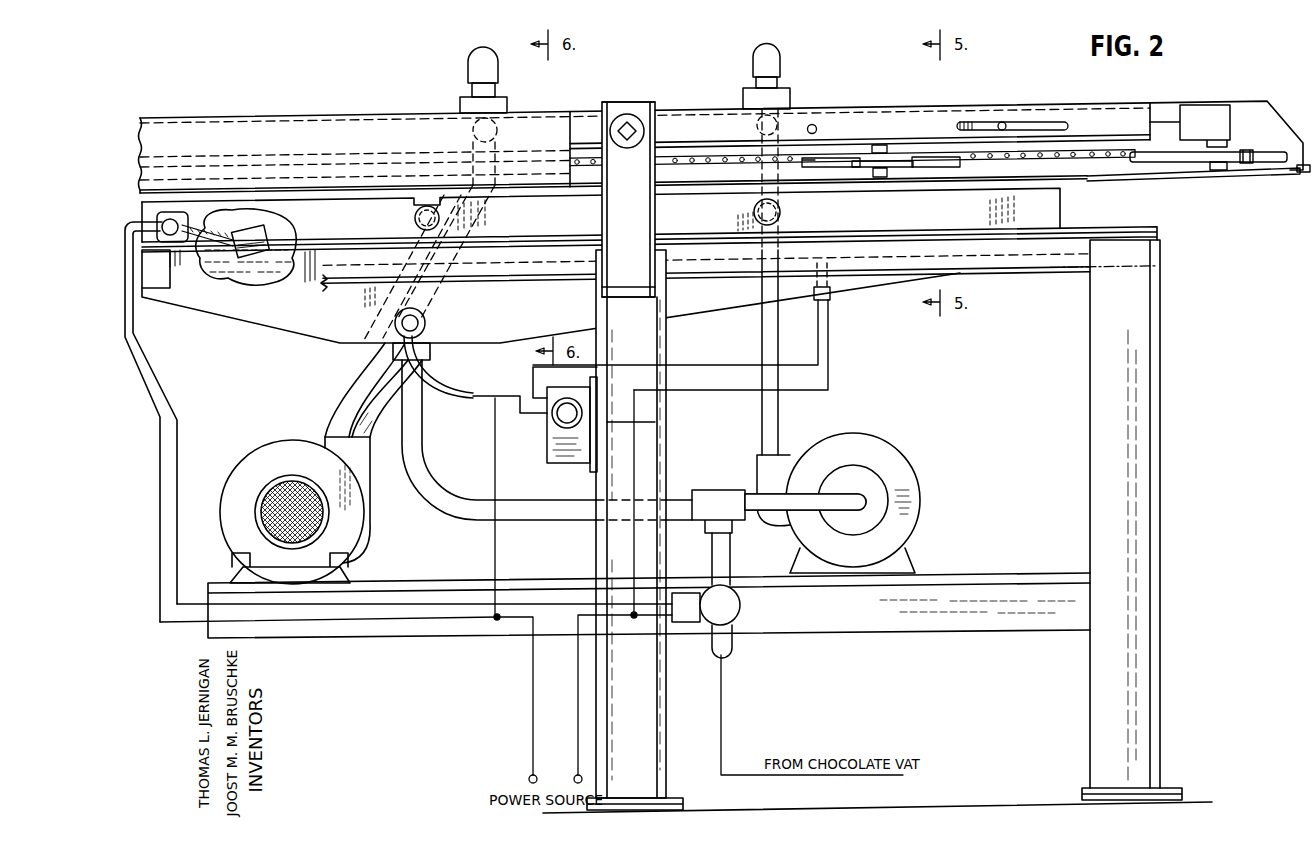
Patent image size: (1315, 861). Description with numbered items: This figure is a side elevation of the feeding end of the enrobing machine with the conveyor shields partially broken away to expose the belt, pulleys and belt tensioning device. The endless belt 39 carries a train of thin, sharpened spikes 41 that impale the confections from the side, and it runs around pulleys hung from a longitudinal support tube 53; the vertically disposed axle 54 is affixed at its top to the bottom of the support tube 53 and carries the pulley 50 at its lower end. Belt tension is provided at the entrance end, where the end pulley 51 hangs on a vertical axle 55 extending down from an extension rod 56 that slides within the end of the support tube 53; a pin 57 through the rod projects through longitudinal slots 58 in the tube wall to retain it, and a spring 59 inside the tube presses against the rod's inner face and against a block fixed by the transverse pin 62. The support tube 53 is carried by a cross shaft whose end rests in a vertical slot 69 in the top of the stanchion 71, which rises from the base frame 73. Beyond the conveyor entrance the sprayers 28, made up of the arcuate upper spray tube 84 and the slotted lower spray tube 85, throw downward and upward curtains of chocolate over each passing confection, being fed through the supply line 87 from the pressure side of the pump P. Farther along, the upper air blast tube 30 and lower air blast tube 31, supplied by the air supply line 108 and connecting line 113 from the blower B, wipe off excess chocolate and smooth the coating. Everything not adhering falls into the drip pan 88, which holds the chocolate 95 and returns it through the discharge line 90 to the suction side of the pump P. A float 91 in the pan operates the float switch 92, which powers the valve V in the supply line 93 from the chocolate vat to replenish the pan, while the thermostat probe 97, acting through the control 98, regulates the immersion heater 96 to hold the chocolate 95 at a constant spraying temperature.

The sprayers 28 is at (1282, 176).
The upper air blast tube 30 is at (498, 131).
The lower air blast tube 31 is at (415, 218).
The belt 39 is at (1060, 160).
The spikes 41 is at (1044, 160).
The pulley 50 is at (852, 166).
The end pulley 51 is at (1205, 163).
The support tube 53 is at (873, 110).
The axle 54 is at (884, 174).
The vertical axle 55 is at (1221, 167).
The extension rod 56 is at (1163, 122).
The pin 57 is at (1004, 124).
The longitudinal slots 58 is at (1030, 127).
The spring 59 is at (971, 125).
The transverse pin 62 is at (816, 126).
The vertical slot 69 is at (622, 114).
The stanchion 71 is at (650, 106).
The base frame 73 is at (658, 351).
The upper spray tube 84 is at (757, 103).
The lower spray tube 85 is at (781, 212).
The supply line 87 is at (770, 405).
The drip pan 88 is at (1052, 202).
The discharge line 90 is at (430, 355).
The float 91 is at (261, 234).
The float switch 92 is at (180, 222).
The supply line 93 is at (729, 556).
The chocolate 95 is at (220, 270).
The immersion heater 96 is at (426, 323).
The probe 97 is at (830, 288).
The control 98 is at (552, 428).
The air supply line 108 is at (374, 405).
The connecting line 113 is at (355, 372).
The blower B is at (275, 450).
The pump P is at (908, 478).
The valve V is at (706, 605).